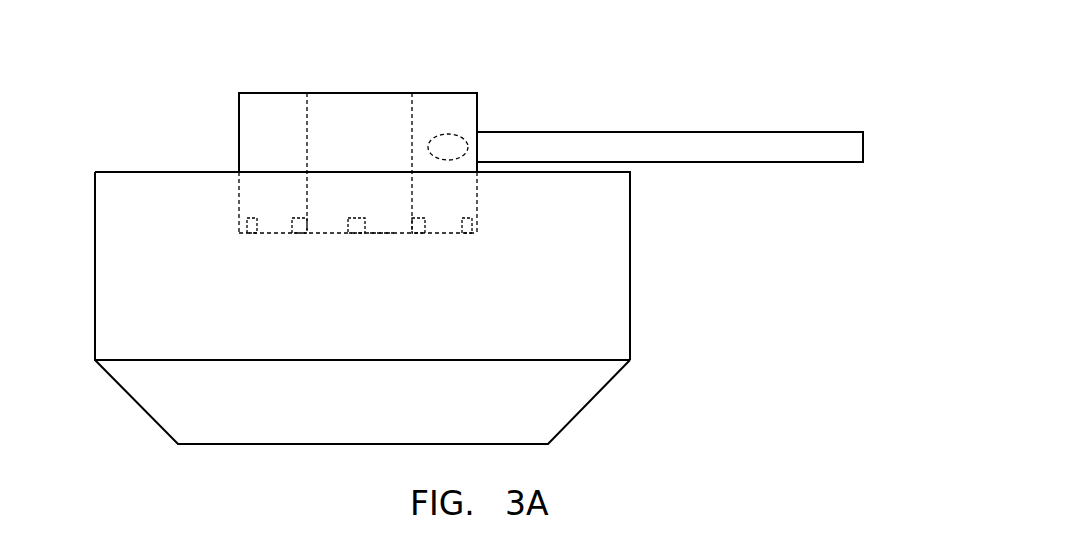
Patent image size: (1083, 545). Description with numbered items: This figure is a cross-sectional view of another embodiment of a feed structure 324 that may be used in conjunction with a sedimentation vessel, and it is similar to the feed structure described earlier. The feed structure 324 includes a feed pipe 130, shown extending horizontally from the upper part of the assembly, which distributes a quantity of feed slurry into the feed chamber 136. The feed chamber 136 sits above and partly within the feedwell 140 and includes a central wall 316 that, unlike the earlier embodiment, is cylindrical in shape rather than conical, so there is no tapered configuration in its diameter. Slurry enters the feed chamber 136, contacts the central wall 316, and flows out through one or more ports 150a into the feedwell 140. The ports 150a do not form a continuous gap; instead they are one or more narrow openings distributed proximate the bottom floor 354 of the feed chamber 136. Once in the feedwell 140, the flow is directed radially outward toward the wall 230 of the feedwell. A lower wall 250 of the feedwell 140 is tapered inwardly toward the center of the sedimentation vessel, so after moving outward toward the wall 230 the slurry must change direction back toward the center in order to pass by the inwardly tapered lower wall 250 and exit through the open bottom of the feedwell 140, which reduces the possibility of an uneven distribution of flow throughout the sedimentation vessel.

The feed structure 324 is at (564, 84).
The feedwell 140 is at (630, 326).
The wall of the feedwell 230 is at (630, 252).
The lower wall 250 is at (598, 395).
The feed chamber 136 is at (437, 112).
The central wall 316 is at (307, 127).
The feed pipe 130 is at (660, 146).
The ports 150a is at (353, 233).
The bottom floor 354 is at (382, 233).